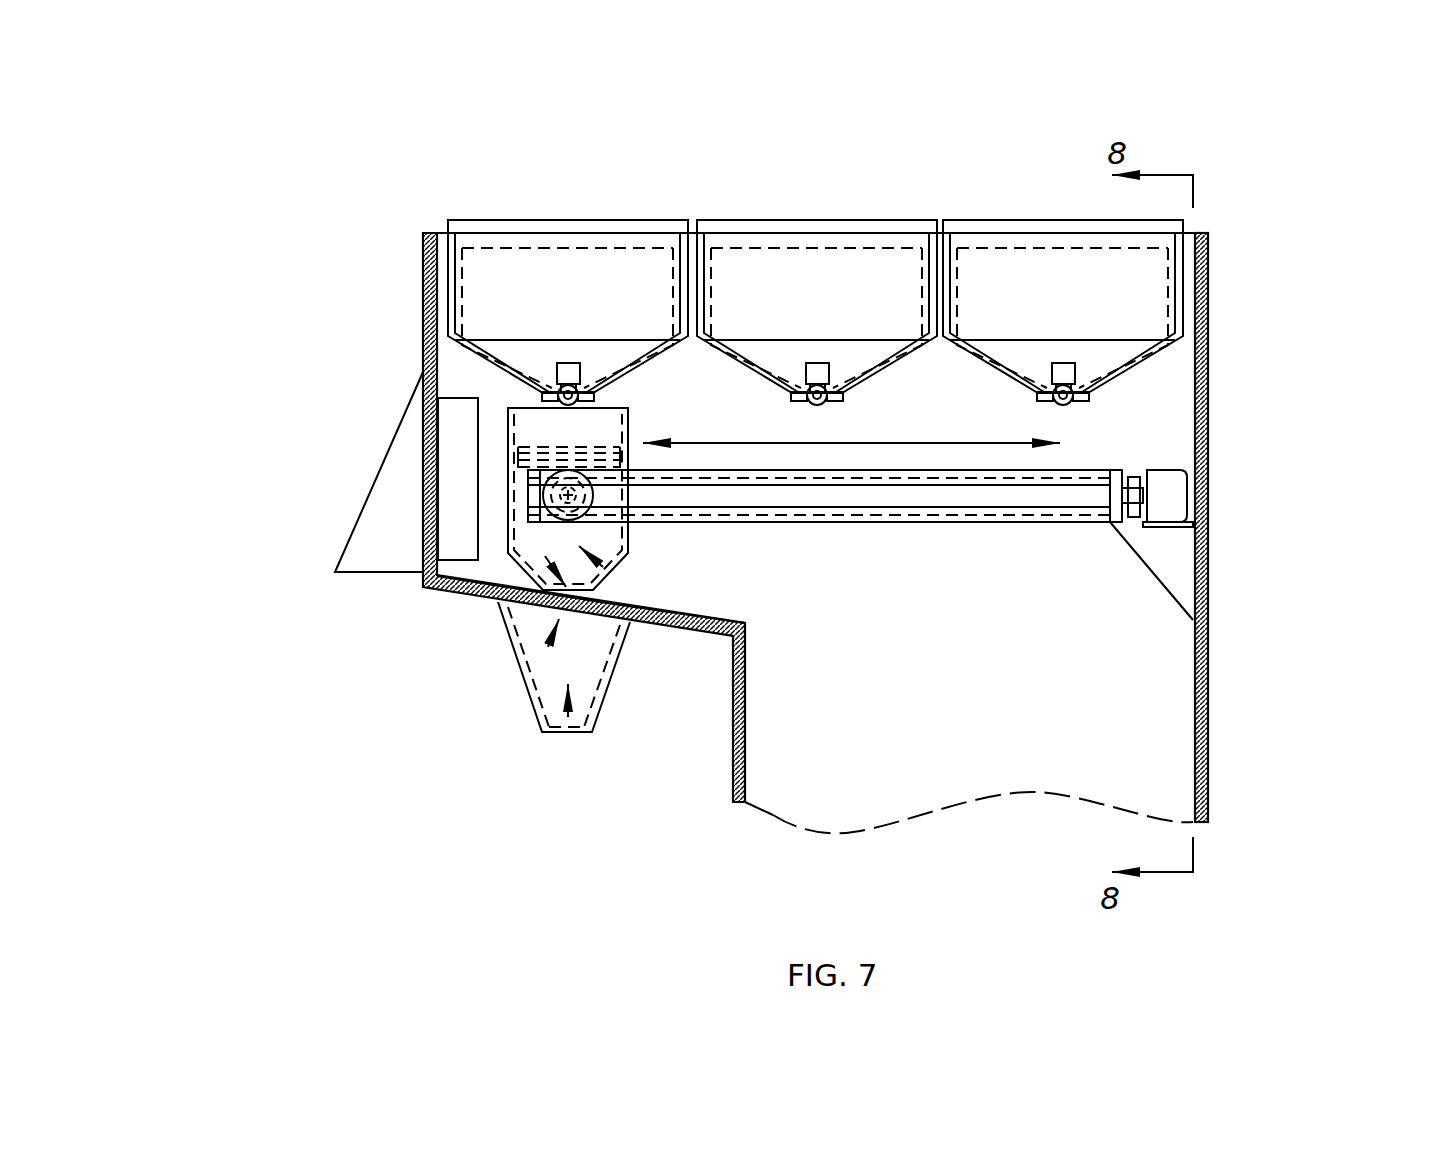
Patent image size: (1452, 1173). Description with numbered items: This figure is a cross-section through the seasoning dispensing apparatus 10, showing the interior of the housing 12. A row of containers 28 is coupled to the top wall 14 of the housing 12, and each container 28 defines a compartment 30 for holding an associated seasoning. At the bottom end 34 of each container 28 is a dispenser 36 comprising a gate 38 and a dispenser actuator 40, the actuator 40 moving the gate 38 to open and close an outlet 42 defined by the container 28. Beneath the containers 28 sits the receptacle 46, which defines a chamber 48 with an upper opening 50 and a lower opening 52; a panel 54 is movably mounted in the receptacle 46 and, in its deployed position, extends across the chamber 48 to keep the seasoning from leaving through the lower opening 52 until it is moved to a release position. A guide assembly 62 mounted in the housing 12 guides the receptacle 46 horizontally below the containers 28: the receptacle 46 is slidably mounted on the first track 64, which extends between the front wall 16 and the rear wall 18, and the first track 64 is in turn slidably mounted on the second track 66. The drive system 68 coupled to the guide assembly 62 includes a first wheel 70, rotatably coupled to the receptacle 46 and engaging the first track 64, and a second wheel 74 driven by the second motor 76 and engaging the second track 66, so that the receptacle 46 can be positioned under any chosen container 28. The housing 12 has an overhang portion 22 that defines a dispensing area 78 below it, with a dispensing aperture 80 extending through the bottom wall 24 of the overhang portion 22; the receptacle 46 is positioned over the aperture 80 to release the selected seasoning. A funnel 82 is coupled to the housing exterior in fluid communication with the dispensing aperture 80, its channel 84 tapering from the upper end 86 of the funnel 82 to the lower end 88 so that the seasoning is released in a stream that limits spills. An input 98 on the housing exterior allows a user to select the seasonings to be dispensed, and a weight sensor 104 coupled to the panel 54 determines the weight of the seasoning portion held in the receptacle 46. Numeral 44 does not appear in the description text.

The seasoning dispensing apparatus 10 is at (325, 175).
The housing 12 is at (1215, 228).
The top wall 14 is at (430, 233).
The front wall 16 is at (423, 273).
The rear wall 18 is at (1209, 625).
The overhang portion 22 is at (450, 588).
The bottom wall 24 is at (686, 635).
The container 28 is at (654, 267).
The compartment 30 is at (510, 262).
The bottom end 34 is at (600, 363).
The dispenser 36 is at (573, 370).
The gate 38 is at (547, 392).
The dispenser actuator 40 is at (567, 352).
The outlet 42 is at (836, 406).
The hopper opening 44 is at (483, 258).
The receptacle 46 is at (628, 537).
The chamber 48 is at (603, 567).
The upper opening 50 is at (517, 400).
The lower opening 52 is at (545, 556).
The panel 54 is at (520, 455).
The guide assembly 62 is at (1102, 545).
The first track 64 is at (920, 523).
The second track 66 is at (1140, 470).
The drive system 68 is at (1219, 490).
The first wheel 70 is at (543, 493).
The second wheel 74 is at (1137, 522).
The second motor 76 is at (1172, 502).
The dispensing area 78 is at (545, 772).
The dispensing aperture 80 is at (527, 690).
The funnel 82 is at (611, 688).
The channel 84 is at (560, 735).
The upper end 86 is at (498, 605).
The lower end 88 is at (586, 735).
The input 98 is at (349, 540).
The weight sensor 104 is at (515, 418).